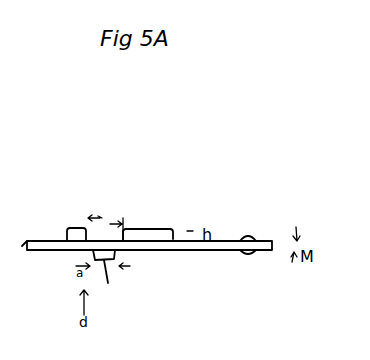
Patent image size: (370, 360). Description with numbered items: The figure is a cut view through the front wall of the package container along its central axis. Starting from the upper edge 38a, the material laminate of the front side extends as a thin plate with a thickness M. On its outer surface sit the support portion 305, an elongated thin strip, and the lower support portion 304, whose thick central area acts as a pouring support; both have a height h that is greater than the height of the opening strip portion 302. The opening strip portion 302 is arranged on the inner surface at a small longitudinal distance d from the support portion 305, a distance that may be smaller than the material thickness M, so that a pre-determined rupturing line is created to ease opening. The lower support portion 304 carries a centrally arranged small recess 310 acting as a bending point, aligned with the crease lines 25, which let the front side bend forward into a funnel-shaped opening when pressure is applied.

The recess 310 is at (240, 260).
The upper edge 38a is at (27, 243).
The support portion 305 is at (71, 226).
The lower support portion 304 is at (148, 228).
The opening strip portion 302 is at (123, 278).
The crease lines 25 is at (250, 235).